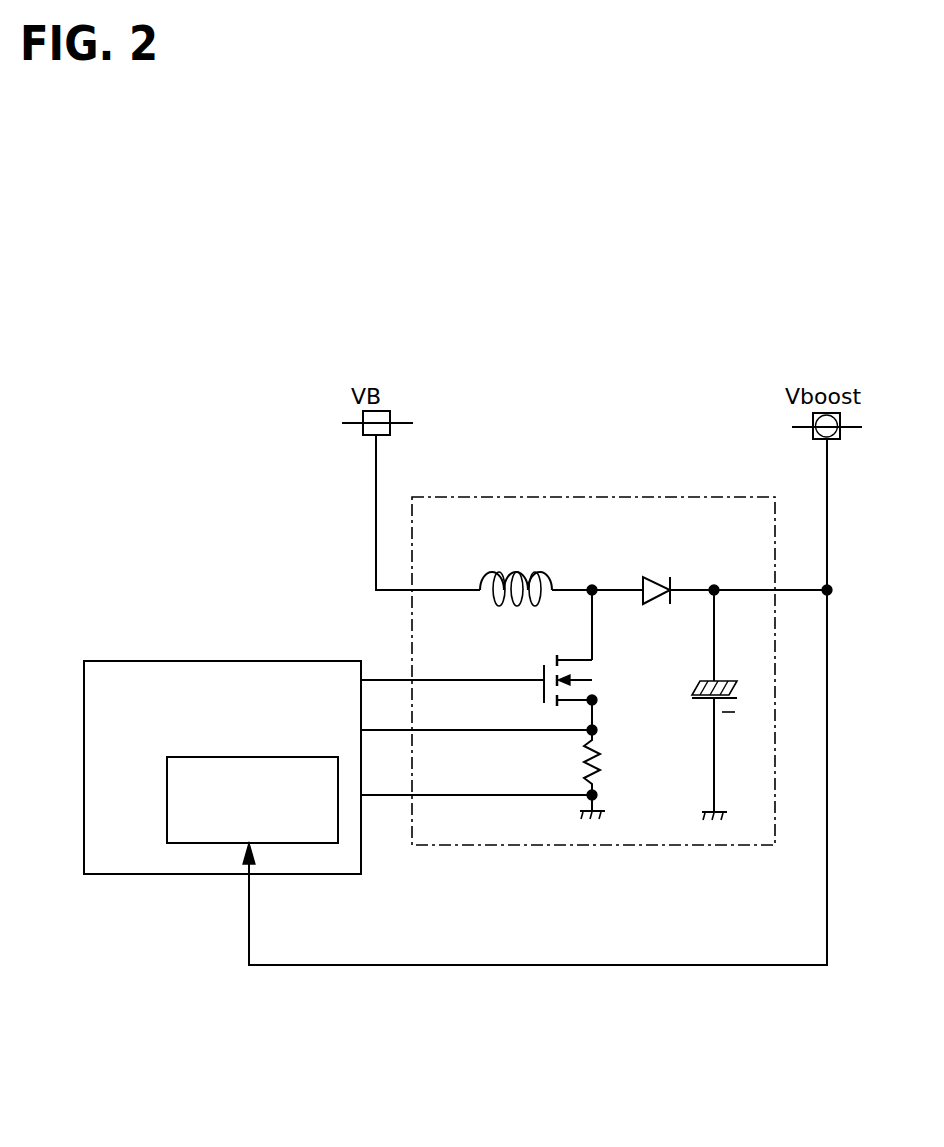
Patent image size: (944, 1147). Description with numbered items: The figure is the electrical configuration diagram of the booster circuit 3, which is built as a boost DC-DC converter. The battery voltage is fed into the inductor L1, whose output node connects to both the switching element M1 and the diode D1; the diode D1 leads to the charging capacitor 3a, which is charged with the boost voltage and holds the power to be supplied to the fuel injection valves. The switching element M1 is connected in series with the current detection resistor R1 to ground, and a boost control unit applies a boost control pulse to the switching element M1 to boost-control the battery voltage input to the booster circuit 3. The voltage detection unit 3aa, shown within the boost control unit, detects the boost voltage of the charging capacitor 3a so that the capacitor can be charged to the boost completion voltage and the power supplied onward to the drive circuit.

The booster circuit 3 is at (622, 497).
The charging capacitor 3a is at (696, 690).
The voltage detection unit 3aa is at (167, 800).
The inductor L1 is at (510, 573).
The diode D1 is at (655, 580).
The switching element M1 is at (543, 668).
The current detection resistor R1 is at (596, 760).